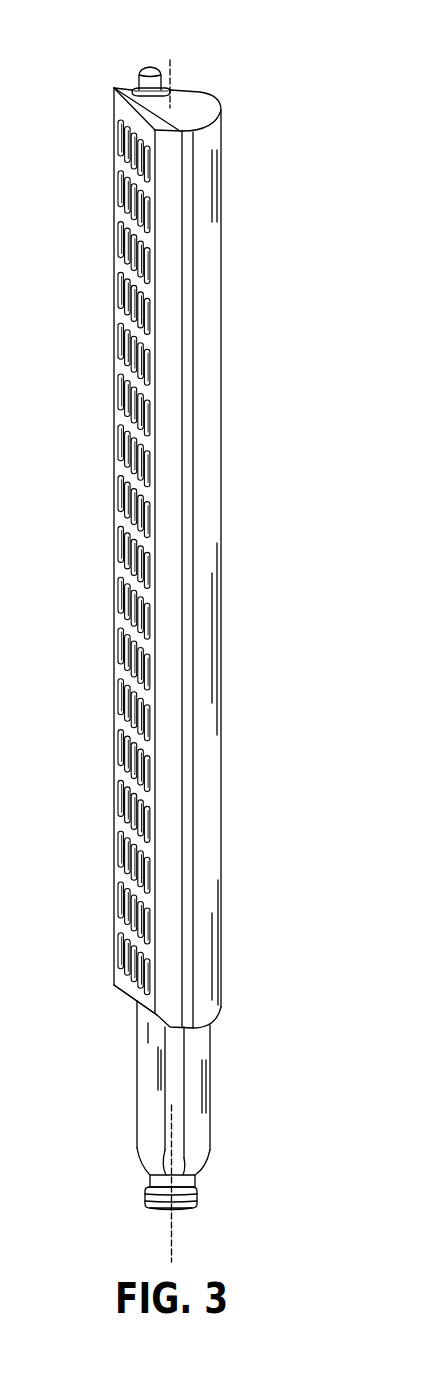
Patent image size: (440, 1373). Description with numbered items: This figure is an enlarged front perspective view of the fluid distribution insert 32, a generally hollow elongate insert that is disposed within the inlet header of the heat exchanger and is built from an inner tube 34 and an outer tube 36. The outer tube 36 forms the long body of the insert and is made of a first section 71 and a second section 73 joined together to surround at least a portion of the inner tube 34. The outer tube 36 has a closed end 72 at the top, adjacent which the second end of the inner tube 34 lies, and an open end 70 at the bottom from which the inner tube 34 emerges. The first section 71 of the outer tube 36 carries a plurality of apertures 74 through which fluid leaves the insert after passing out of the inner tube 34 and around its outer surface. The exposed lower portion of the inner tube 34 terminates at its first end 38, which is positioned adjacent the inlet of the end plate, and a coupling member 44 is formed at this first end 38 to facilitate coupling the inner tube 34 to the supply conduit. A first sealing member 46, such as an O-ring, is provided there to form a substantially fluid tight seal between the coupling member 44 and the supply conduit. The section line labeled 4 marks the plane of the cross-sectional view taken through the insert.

The fluid distribution insert 32 is at (74, 324).
The inner tube 34 is at (141, 1114).
The outer tube 36 is at (126, 83).
The first end 38 is at (150, 1164).
The coupling member 44 is at (183, 1210).
The first sealing member 46 is at (200, 1195).
The open end 70 is at (128, 1000).
The first section 71 is at (125, 112).
The closed end 72 is at (200, 107).
The second section 73 is at (212, 137).
The apertures 74 is at (120, 588).
The section line 4- 4 is at (170, 60).